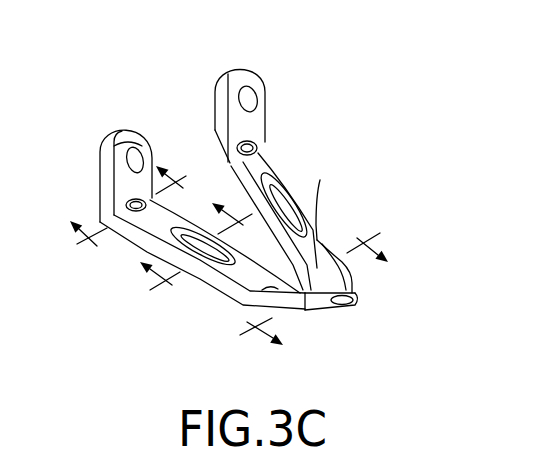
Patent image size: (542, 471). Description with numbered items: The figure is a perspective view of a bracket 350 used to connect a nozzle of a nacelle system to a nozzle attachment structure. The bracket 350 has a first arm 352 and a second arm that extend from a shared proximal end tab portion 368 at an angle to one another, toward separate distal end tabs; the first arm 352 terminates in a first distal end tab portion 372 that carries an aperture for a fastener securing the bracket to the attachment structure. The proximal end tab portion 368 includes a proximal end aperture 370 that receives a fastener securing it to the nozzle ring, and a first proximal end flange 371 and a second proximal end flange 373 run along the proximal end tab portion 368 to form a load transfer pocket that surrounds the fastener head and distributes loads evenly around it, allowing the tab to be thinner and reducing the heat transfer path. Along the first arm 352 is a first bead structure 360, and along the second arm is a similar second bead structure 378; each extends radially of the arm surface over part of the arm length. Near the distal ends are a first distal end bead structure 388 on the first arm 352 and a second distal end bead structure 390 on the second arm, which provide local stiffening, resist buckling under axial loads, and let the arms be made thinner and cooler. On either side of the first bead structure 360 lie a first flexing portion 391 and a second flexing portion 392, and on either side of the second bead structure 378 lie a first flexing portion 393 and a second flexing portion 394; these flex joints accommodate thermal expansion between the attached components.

The bracket 350 is at (315, 112).
The first arm 352 is at (227, 288).
The first bead structure 360 is at (147, 251).
The proximal end tab portion 368 is at (352, 293).
The proximal end aperture 370 is at (10, 257).
The first proximal end flange 371 is at (305, 310).
The first distal end tab portion 372 is at (104, 150).
The second proximal end flange 373 is at (362, 262).
The second bead structure 378 is at (295, 207).
The first distal end bead structure 388 is at (107, 222).
The second distal end bead structure 390 is at (258, 147).
The first flexing portion 391 is at (243, 283).
The second flexing portion 392 is at (130, 190).
The first flexing portion 393 is at (320, 180).
The second flexing portion 394 is at (247, 202).